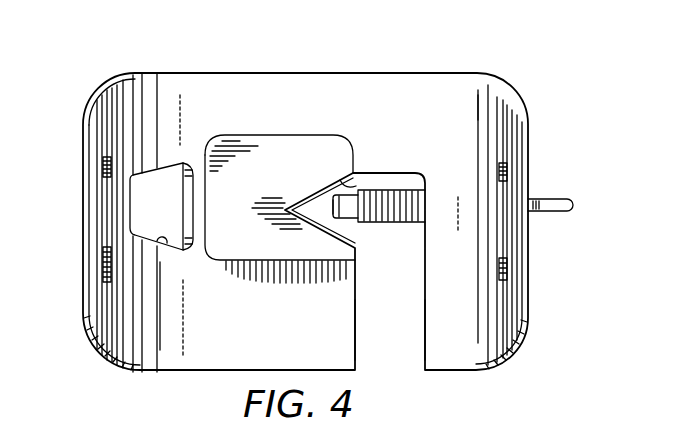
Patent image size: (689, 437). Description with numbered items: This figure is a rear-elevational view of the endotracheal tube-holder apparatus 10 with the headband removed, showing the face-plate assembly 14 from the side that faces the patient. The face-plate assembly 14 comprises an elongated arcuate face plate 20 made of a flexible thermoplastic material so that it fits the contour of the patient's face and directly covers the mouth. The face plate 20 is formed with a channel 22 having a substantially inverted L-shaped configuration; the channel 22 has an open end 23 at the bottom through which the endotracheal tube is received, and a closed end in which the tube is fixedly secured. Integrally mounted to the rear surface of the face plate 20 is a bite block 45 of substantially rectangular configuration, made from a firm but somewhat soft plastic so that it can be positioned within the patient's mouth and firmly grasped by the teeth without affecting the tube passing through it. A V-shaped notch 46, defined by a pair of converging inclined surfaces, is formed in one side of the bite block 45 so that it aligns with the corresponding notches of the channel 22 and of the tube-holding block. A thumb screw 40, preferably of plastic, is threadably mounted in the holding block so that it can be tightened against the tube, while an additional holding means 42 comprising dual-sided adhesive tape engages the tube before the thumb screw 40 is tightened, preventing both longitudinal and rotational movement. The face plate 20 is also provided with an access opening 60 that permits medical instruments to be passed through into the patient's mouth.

The endotracheal tube-holder apparatus 10 is at (315, 110).
The face-plate assembly 14 is at (226, 72).
The face plate 20 is at (424, 80).
The channel 22 is at (357, 333).
The open end 23 is at (426, 358).
The thumb screw 40 is at (399, 188).
The additional holding means 42 is at (338, 226).
The bite block 45 is at (278, 148).
The V-shaped notch 46 is at (356, 186).
The access opening 60 is at (170, 250).